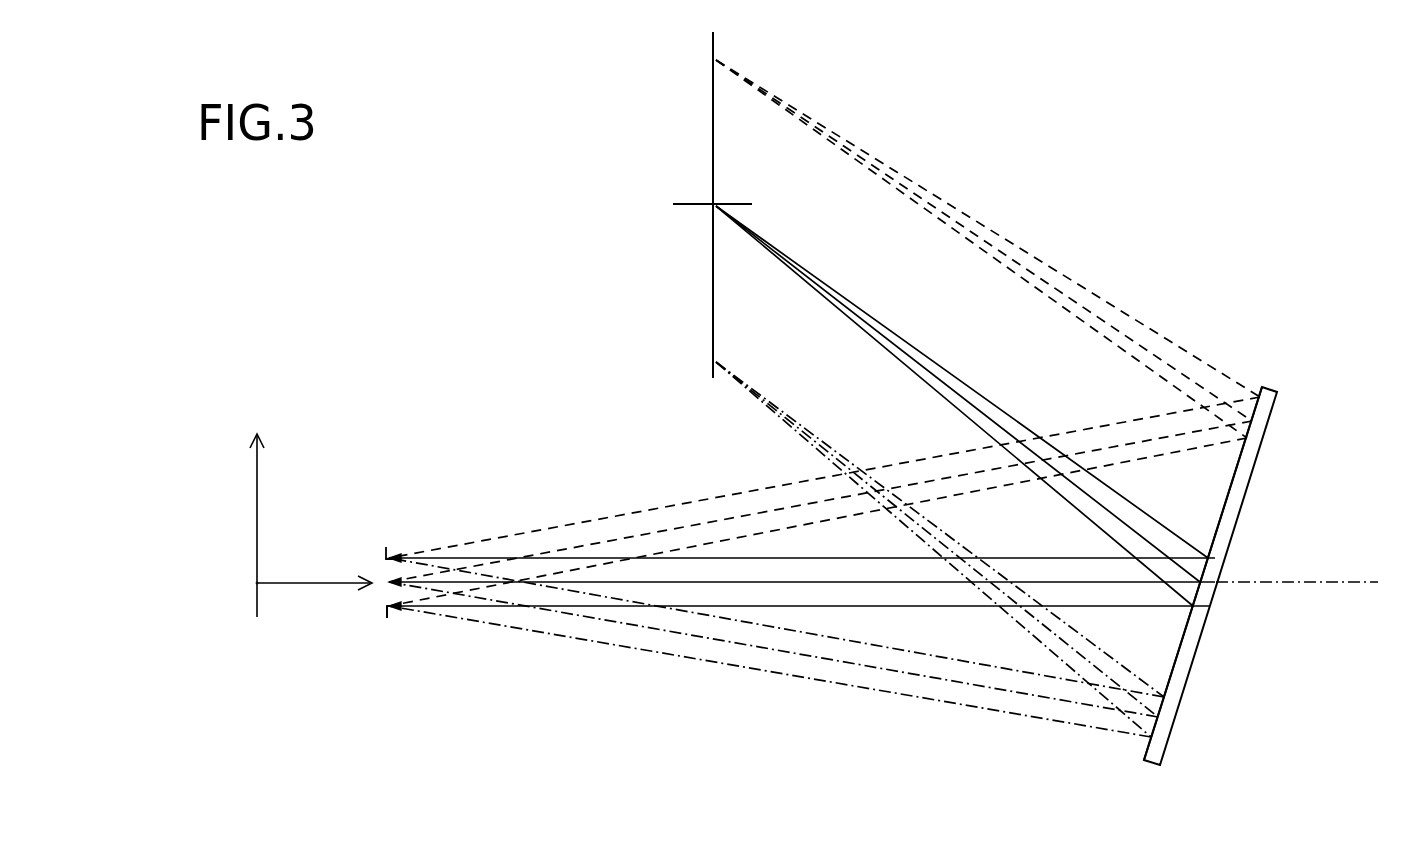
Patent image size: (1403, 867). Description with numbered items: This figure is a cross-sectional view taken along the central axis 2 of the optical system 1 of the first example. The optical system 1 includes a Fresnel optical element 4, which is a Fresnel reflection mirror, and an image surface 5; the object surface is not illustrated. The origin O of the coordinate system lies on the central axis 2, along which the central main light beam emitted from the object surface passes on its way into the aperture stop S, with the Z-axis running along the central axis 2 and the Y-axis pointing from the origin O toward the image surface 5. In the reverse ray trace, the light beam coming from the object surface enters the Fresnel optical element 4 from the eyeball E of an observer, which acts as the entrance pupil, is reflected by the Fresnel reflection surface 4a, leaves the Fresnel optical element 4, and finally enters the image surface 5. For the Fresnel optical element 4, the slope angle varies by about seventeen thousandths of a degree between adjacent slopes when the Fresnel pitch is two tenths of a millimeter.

The optical system 1 is at (1173, 191).
The central axis 2 is at (252, 583).
The Fresnel optical element 4 is at (1190, 660).
The Fresnel reflection surface 4a is at (1165, 752).
The image surface 5 is at (713, 157).
The eyeball E is at (382, 593).
The aperture stop S is at (388, 618).
The origin O is at (257, 580).